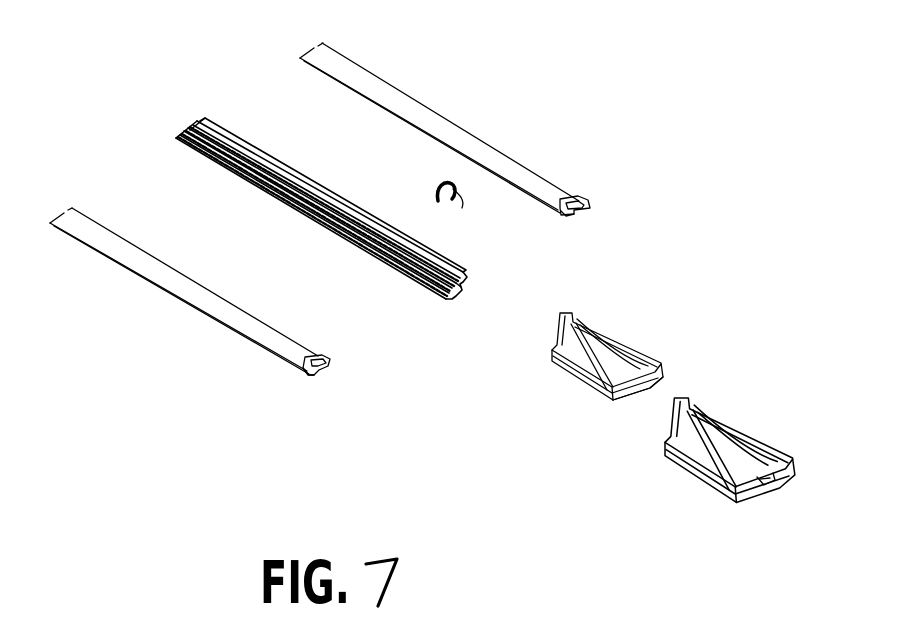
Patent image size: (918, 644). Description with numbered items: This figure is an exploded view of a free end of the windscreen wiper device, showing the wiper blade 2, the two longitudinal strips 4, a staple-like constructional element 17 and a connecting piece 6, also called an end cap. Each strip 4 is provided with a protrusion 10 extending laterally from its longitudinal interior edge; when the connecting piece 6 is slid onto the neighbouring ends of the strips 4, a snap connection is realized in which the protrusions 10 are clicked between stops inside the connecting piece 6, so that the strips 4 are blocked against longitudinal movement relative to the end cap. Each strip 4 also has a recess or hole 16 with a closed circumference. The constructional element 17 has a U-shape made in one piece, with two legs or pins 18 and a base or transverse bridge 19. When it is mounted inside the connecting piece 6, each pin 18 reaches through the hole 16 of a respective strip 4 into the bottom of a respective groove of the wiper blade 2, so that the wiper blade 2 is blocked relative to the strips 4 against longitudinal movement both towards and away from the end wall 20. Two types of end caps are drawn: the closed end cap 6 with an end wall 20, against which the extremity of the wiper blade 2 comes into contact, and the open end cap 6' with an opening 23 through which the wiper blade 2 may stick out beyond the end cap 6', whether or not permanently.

The wiper blade 2 is at (213, 122).
The longitudinal strips 4 is at (403, 99).
The connecting piece 6 is at (612, 340).
The end cap 6' is at (730, 420).
The protrusion 10 is at (567, 216).
The second recess 16 is at (565, 198).
The constructional element 17 is at (413, 172).
The pins 18 is at (436, 204).
The base 19 is at (444, 183).
The end wall 20 is at (638, 402).
The opening 23 is at (770, 488).